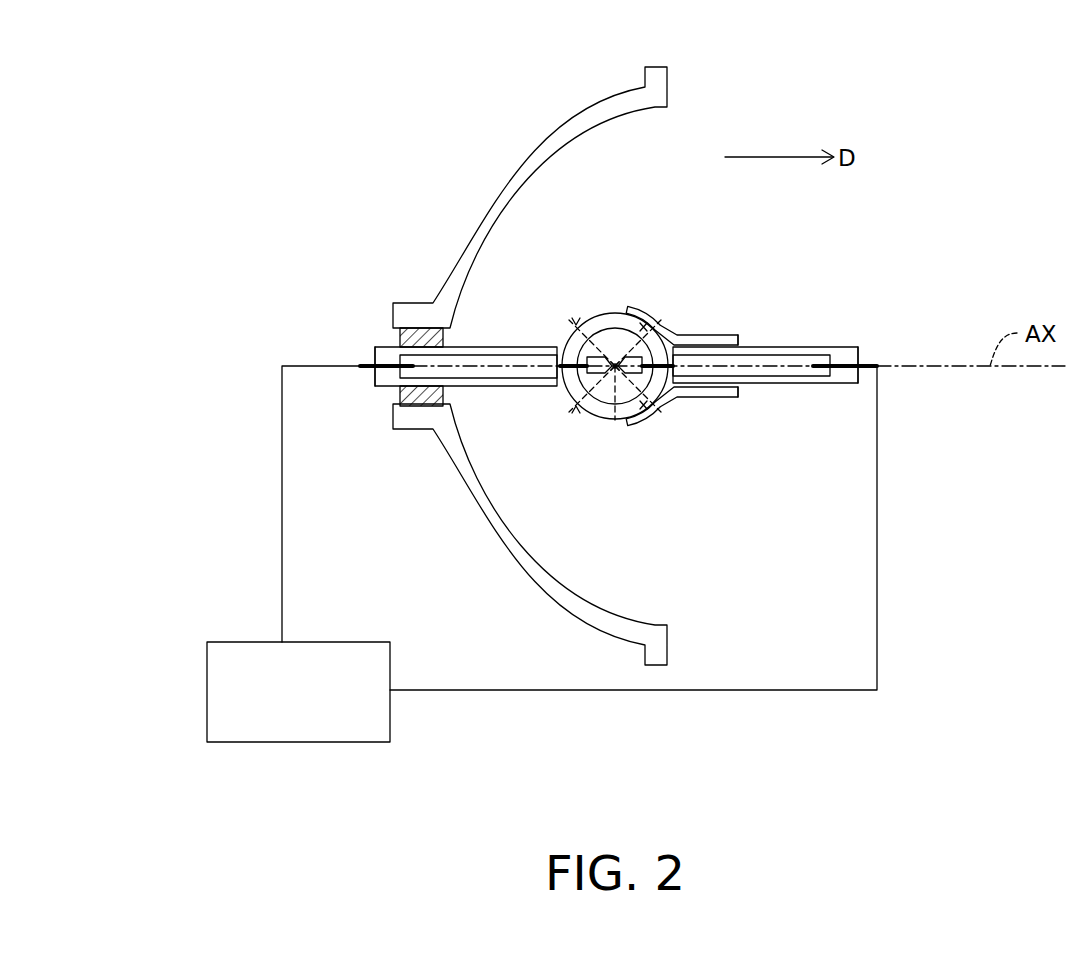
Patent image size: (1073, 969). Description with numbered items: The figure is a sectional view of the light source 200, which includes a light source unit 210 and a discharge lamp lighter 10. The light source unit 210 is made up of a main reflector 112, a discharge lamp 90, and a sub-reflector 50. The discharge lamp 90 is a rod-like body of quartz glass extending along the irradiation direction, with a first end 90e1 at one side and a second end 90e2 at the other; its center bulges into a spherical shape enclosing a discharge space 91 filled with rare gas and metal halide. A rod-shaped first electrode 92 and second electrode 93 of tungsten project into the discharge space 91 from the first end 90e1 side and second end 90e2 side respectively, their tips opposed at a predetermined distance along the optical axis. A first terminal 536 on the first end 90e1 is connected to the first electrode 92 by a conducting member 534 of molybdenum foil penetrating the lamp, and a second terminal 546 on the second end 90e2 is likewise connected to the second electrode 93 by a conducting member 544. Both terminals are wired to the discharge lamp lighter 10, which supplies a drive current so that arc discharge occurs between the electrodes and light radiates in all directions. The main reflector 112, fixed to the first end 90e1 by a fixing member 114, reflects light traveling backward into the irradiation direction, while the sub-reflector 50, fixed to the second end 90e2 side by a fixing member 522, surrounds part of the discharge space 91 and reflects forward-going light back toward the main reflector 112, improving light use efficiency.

The light source 200 is at (990, 98).
The light source unit 210 is at (425, 160).
The discharge lamp lighter 10 is at (330, 642).
The main reflector 112 is at (522, 163).
The fixing member 114 is at (400, 330).
The conducting member 534 is at (492, 374).
The first terminal 536 is at (373, 374).
The conducting member 544 is at (766, 374).
The second terminal 546 is at (866, 374).
The discharge lamp 90 is at (606, 316).
The first end 90e1 is at (390, 345).
The second end 90e2 is at (835, 347).
The discharge space 91 is at (612, 390).
The first electrode 92 is at (578, 396).
The second electrode 93 is at (663, 397).
The sub-reflector 50 is at (643, 318).
The fixing member 522 is at (738, 338).